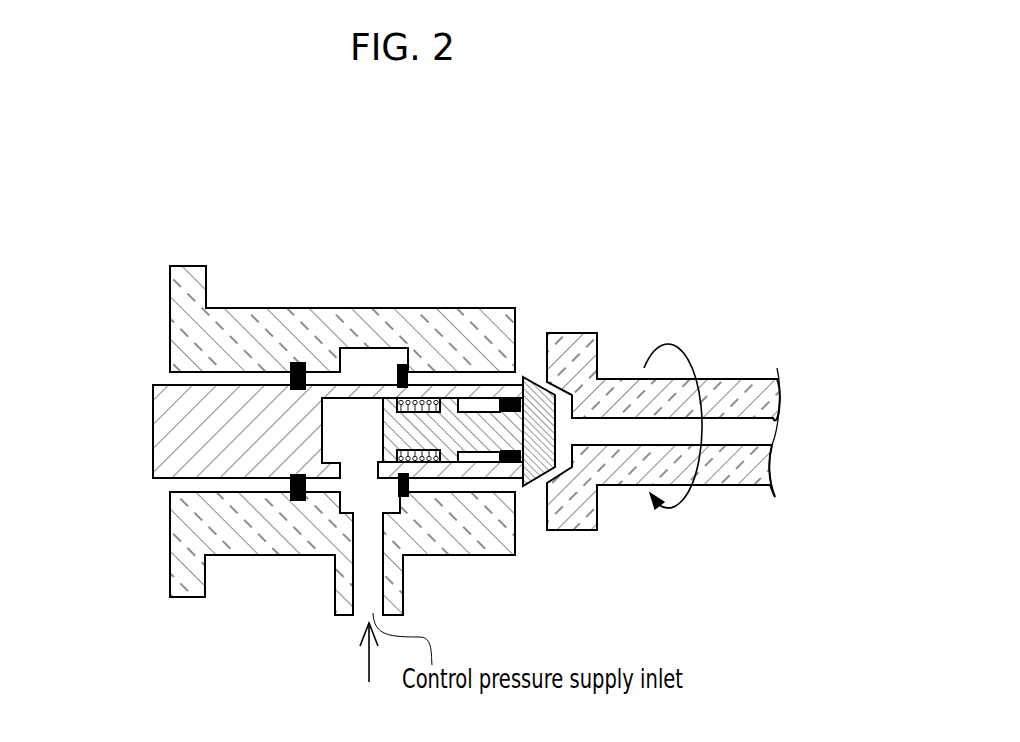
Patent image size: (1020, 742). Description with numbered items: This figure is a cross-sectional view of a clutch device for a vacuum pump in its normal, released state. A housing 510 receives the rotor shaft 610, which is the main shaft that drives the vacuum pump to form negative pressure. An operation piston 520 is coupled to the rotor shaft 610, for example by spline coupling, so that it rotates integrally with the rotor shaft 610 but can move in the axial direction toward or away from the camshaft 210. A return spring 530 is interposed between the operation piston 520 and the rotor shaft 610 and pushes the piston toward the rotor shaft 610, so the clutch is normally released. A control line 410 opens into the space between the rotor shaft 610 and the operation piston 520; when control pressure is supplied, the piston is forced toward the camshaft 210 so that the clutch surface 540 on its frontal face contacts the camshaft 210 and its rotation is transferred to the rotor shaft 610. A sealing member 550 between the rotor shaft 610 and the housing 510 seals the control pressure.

The camshaft 210 is at (728, 392).
The control line 410 is at (368, 669).
The housing 510 is at (185, 525).
The operation piston 520 is at (480, 428).
The return spring 530 is at (421, 398).
The clutch surface 540 is at (553, 384).
The sealing member 550 is at (298, 502).
The rotor shaft 610 is at (183, 432).